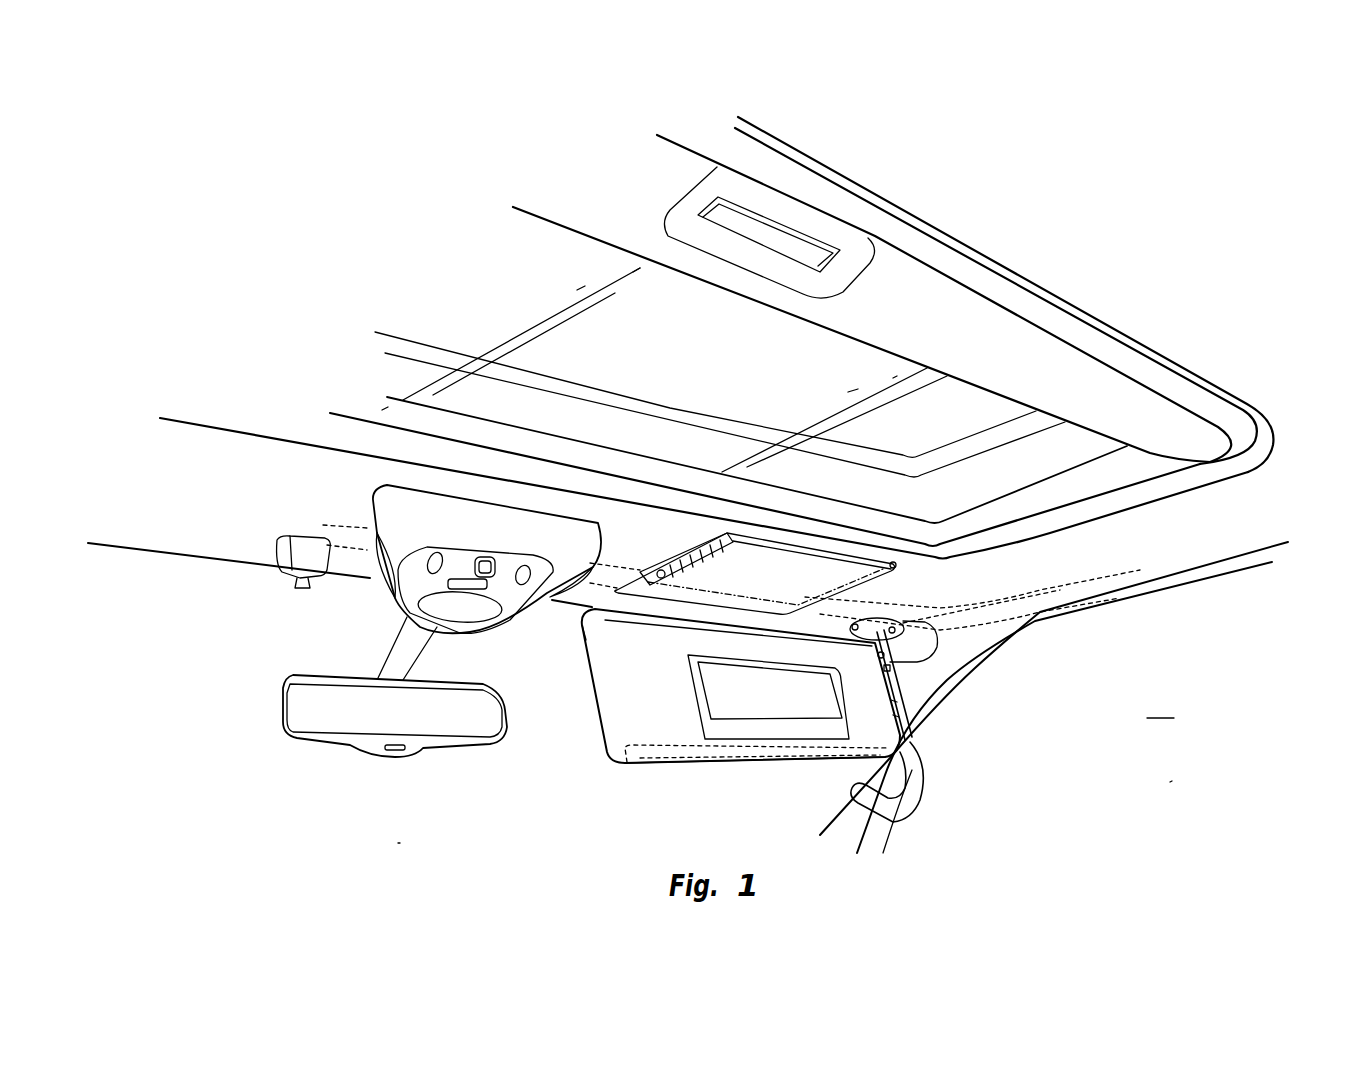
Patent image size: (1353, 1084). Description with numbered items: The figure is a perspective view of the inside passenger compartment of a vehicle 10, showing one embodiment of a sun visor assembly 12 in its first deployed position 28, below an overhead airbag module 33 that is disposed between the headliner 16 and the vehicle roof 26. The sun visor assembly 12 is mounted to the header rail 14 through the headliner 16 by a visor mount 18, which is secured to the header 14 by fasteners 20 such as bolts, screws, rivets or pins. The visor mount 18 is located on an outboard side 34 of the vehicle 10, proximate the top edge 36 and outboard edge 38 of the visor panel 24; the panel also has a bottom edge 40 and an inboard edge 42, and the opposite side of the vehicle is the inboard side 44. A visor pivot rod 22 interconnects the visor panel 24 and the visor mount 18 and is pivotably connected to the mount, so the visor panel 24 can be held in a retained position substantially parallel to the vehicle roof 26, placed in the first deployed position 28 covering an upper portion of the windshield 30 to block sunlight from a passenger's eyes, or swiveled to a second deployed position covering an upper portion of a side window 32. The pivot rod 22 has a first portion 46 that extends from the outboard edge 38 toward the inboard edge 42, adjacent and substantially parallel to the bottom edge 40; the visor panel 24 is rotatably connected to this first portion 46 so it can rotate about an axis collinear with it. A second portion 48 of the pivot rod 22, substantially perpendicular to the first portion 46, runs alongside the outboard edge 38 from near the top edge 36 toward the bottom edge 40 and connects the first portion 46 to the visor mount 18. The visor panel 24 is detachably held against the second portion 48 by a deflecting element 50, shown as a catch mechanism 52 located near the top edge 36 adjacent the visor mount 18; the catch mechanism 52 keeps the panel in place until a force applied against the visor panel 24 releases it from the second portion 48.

The vehicle 10 is at (1067, 197).
The sun visor assembly 12 is at (600, 768).
The header rail 14 is at (893, 560).
The headliner 16 is at (1022, 577).
The visor mount 18 is at (928, 650).
The fasteners 20 is at (870, 615).
The visor pivot rod 22 is at (925, 772).
The visor panel 24 is at (627, 712).
The vehicle roof 26 is at (1080, 307).
The first deployed position 28 is at (595, 648).
The windshield 30 is at (402, 777).
The side window 32 is at (1160, 706).
The overhead airbag module 33 is at (660, 548).
The outboard side 34 is at (1178, 778).
The top edge 36 is at (614, 590).
The outboard edge 38 is at (818, 655).
The bottom edge 40 is at (650, 767).
The inboard edge 42 is at (583, 680).
The inboard side 44 is at (393, 843).
The first portion 46 is at (763, 753).
The second portion 48 is at (910, 705).
The deflecting element 50 is at (917, 660).
The catch mechanism 52 is at (896, 716).